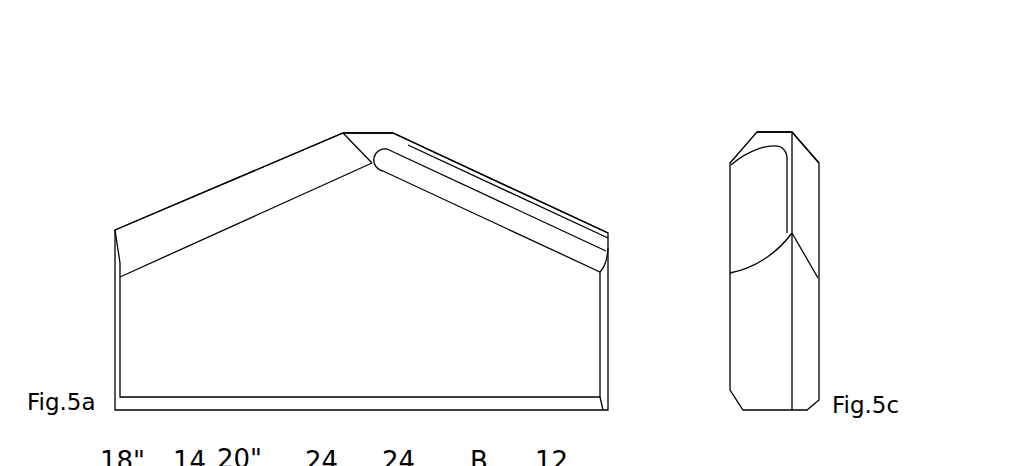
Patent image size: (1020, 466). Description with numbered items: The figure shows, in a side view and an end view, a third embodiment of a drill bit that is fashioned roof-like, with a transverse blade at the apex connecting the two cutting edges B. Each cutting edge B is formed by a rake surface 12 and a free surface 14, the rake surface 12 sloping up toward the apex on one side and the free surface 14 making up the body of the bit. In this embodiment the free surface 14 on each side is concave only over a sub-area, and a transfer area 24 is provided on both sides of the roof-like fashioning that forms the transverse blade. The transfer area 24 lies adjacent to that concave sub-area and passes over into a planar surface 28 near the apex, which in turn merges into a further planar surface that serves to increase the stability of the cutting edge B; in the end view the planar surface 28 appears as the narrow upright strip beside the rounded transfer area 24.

In FIG. 5A, the rake surface 12 is at (161, 240).
In FIG. 5A, the free surface 14 is at (560, 232).
In FIG. 5C, the free surface 14 is at (748, 228).
In FIG. 5A, the transfer area 24 is at (402, 165).
In FIG. 5C, the transfer area 24 is at (748, 166).
In FIG. 5A, the planar surface 28 is at (372, 148).
In FIG. 5C, the planar surface 28 is at (781, 139).
In FIG. 5A, the cutting edge B is at (421, 141).
In FIG. 5C, the cutting edge B is at (795, 163).